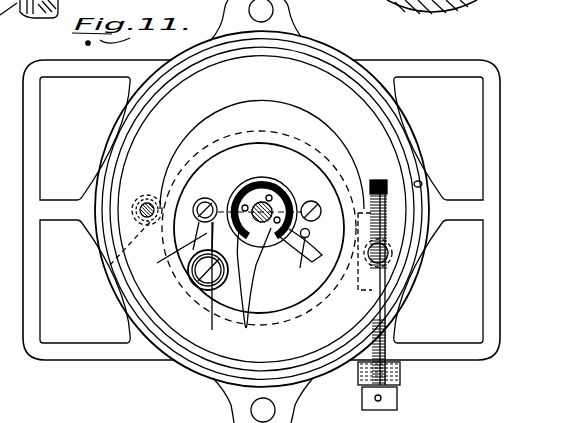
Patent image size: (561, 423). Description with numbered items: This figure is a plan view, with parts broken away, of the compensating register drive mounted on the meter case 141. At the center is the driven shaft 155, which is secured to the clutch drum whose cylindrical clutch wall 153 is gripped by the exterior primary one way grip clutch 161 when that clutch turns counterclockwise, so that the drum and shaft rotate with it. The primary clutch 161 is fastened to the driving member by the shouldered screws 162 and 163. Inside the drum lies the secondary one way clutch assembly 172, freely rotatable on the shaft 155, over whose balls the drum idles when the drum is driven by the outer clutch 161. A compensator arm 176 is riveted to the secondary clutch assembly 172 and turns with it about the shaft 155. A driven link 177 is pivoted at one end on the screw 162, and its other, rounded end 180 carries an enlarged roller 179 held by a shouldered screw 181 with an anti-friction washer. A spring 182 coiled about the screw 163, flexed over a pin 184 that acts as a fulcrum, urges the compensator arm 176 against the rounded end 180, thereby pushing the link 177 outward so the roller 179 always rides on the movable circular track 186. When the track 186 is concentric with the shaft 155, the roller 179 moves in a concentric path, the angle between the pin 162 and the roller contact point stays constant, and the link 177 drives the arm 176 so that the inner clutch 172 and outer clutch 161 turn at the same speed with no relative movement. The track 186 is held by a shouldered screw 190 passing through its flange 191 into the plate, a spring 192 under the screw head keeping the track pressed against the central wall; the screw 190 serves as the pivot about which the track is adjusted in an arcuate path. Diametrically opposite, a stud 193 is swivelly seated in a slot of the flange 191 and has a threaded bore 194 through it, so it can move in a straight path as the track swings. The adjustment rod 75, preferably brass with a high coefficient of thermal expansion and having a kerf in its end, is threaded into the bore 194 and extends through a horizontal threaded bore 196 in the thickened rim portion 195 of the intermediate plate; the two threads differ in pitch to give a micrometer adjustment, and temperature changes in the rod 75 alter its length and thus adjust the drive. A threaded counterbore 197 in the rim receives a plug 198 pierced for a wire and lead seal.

The adjustment rod 75 is at (384, 258).
The meter case 141 is at (422, 185).
The clutch wall 153 is at (282, 180).
The driven shaft 155 is at (276, 196).
The primary one way grip clutch 161 is at (265, 180).
The shouldered screw 162 is at (200, 200).
The shouldered screw 163 is at (337, 186).
The secondary one way clutch assembly 172 is at (248, 185).
The compensator arm 176 is at (217, 190).
The driven link 177 is at (188, 278).
The roller 179 is at (238, 312).
The rounded end of link 180 is at (202, 293).
The shouldered screw 181 is at (244, 322).
The spring 182 is at (287, 263).
The pin 184 is at (300, 268).
The circular track 186 is at (323, 160).
The shouldered screw 190 is at (140, 225).
The flange 191 is at (150, 157).
The spring 192 is at (135, 222).
The stud 193 is at (362, 246).
The threaded bore 194 is at (364, 258).
The thickened rim portion 195 is at (496, 118).
The horizontal threaded bore 196 is at (386, 352).
The threaded counterbore 197 is at (402, 376).
The plug 198 is at (400, 399).